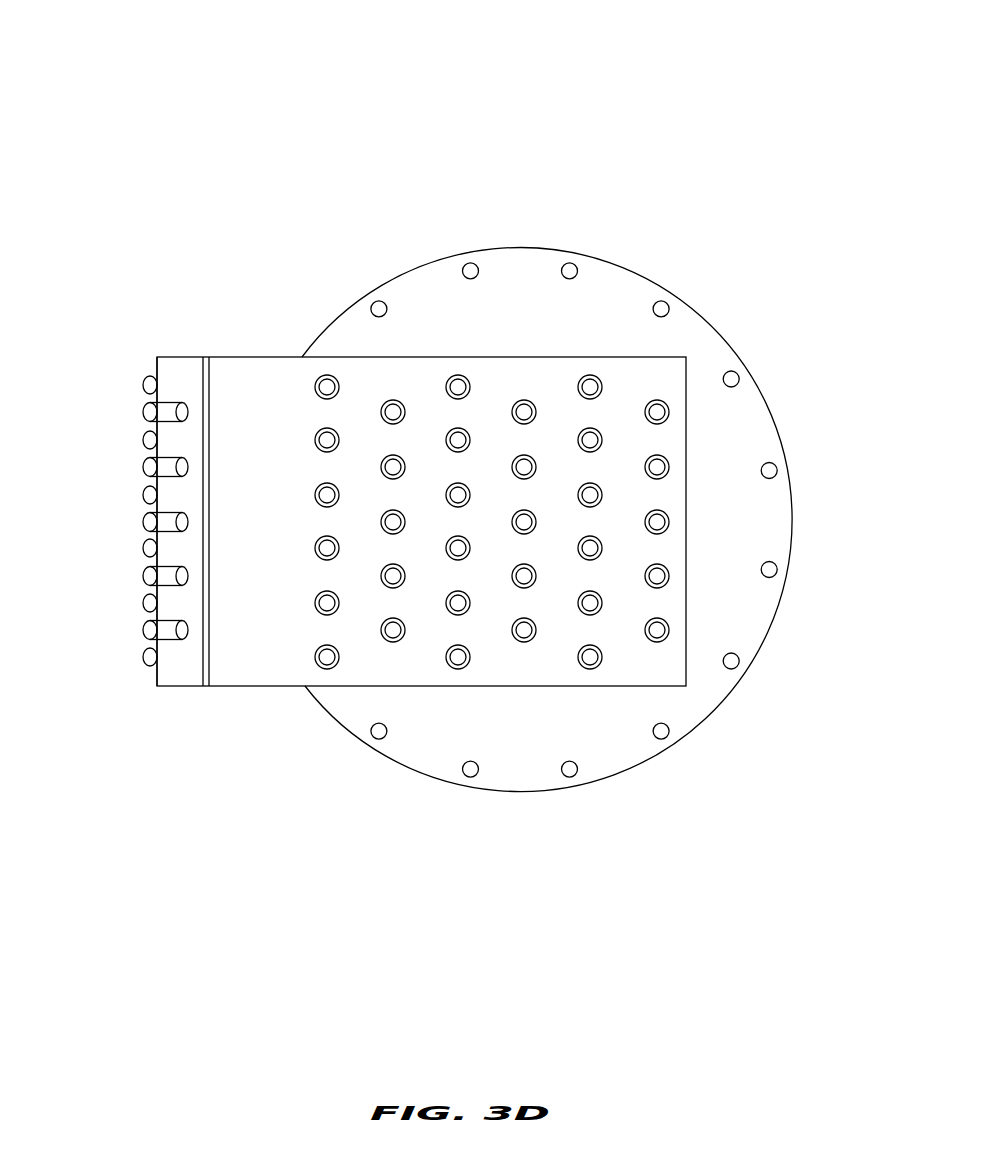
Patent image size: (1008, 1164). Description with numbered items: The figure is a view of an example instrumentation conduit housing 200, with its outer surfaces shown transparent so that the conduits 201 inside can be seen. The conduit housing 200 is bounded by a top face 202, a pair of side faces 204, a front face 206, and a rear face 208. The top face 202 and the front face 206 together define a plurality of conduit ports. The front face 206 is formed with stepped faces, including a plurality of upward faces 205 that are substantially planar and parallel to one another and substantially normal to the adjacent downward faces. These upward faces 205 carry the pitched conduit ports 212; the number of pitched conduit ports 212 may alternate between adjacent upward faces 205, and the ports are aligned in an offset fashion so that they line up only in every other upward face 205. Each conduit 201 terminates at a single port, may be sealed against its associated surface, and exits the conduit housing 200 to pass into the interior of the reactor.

The instrumentation conduit housing 200 is at (751, 70).
The conduits 201 is at (322, 383).
The top face 202 is at (258, 362).
The side faces 204 is at (412, 348).
The upward faces 205 is at (182, 670).
The front face 206 is at (117, 478).
The rear face 208 is at (784, 749).
The pitched conduit ports 212 is at (160, 405).